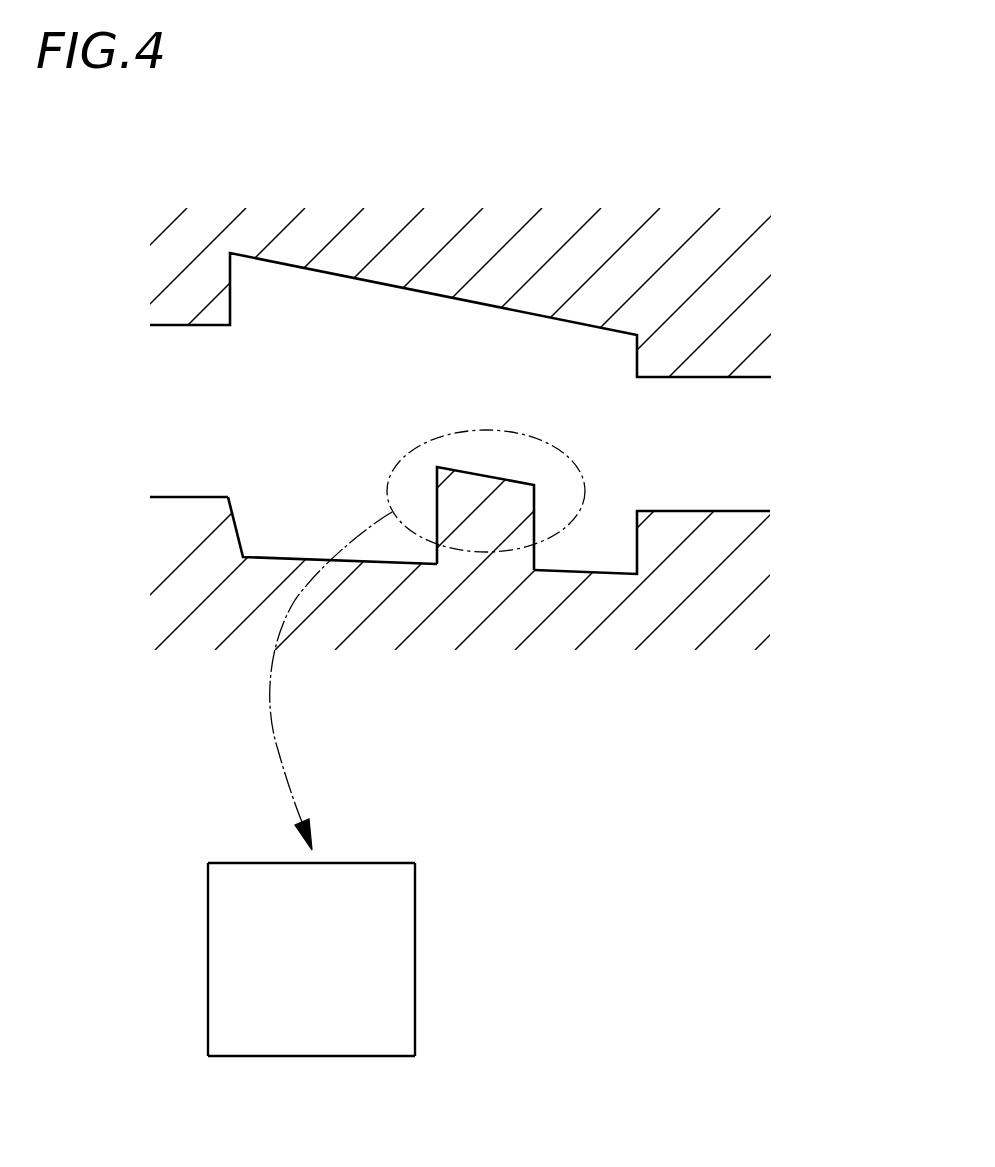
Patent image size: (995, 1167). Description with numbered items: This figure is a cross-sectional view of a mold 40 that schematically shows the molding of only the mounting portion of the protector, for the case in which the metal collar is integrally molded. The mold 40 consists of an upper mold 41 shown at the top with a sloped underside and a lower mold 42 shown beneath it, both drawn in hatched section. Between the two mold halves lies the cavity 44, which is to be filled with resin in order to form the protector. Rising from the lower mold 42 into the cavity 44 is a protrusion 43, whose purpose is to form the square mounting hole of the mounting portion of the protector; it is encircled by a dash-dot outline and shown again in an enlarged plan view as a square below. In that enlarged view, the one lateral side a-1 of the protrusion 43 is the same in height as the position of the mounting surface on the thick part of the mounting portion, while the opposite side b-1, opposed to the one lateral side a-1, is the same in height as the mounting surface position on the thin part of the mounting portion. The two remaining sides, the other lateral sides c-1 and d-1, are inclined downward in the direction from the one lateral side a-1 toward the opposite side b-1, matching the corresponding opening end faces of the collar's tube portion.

The mold 40 is at (478, 640).
The upper mold 41 is at (508, 272).
The lower mold 42 is at (602, 593).
The protrusion 43 is at (453, 477).
The cavity 44 is at (295, 518).
The one lateral side a-1 is at (208, 977).
The opposite side b-1 is at (415, 960).
The other lateral side c-1 is at (313, 1057).
The other lateral side d-1 is at (367, 863).